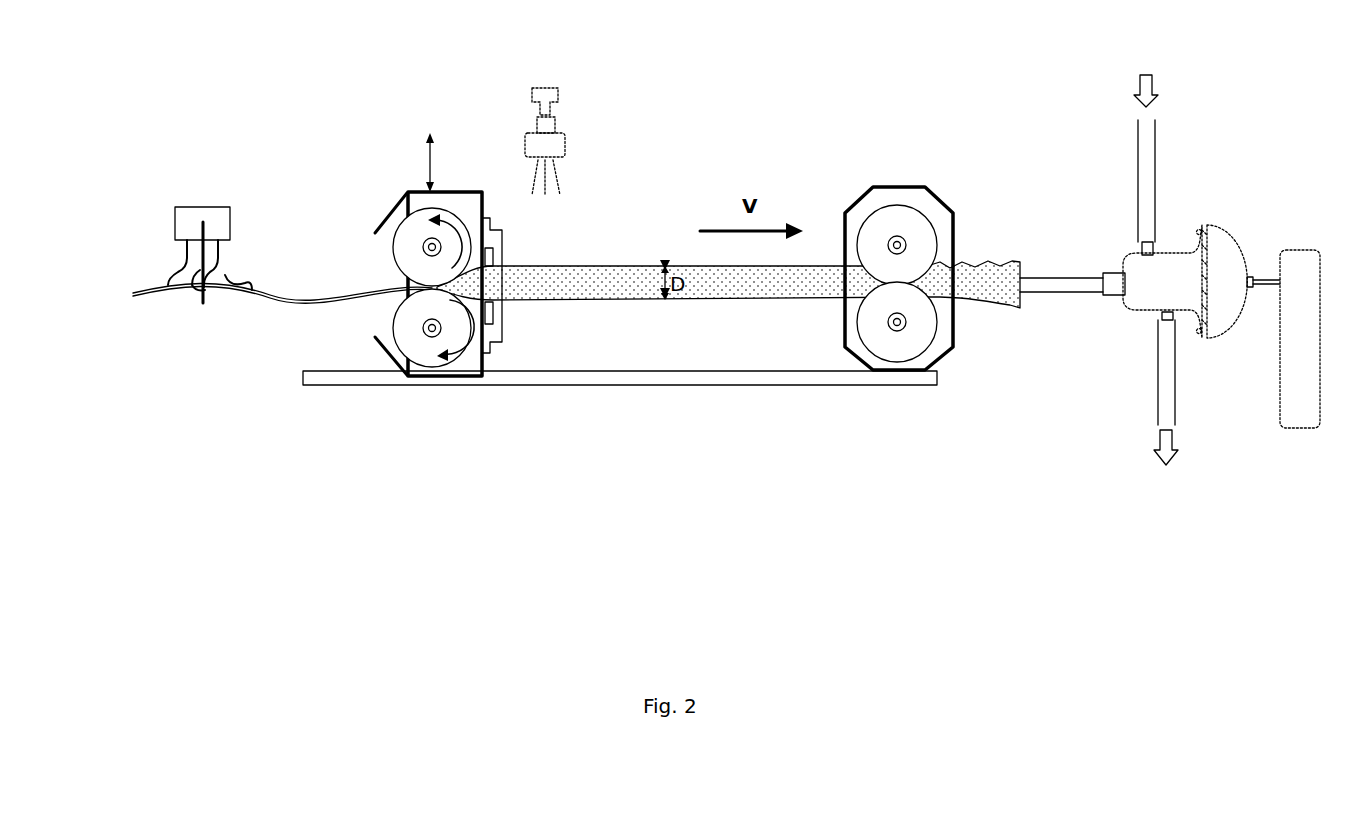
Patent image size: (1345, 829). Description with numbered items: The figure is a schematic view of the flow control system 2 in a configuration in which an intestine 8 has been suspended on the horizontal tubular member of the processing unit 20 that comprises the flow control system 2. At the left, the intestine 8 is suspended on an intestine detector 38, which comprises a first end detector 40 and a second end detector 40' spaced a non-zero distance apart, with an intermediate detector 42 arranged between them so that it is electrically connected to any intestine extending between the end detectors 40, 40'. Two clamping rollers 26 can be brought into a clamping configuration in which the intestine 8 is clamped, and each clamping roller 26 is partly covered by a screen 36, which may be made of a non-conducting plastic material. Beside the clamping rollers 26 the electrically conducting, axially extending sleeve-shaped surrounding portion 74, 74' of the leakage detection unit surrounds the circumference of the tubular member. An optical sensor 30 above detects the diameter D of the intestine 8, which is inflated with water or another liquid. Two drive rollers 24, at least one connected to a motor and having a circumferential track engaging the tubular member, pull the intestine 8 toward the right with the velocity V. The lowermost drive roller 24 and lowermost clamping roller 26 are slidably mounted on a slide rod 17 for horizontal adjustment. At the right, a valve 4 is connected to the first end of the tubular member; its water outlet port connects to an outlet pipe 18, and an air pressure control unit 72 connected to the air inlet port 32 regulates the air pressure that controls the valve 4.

The flow control system 2 is at (732, 413).
The valve 4 is at (1170, 270).
The intestine 8 is at (642, 267).
The slide rod 17 is at (738, 372).
The water outlet port / outlet pipe 18 is at (1158, 408).
The processing unit 20 is at (528, 516).
The drive rollers 24 is at (930, 217).
The clamping rollers 26 is at (407, 198).
The optical sensor 30 is at (565, 147).
The air inlet port 32 is at (1247, 288).
The screen 36 is at (470, 190).
The intestine detector 38 is at (209, 178).
The first end detector 40 is at (276, 312).
The second end detector 40' is at (274, 268).
The intermediate detector 42 is at (200, 297).
The air pressure control unit 72 is at (1283, 400).
The surrounding portion 74 is at (541, 244).
The surrounding portion 74' is at (546, 326).